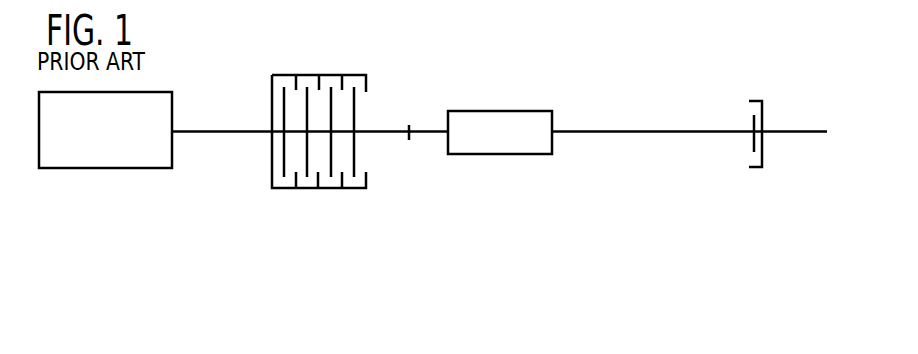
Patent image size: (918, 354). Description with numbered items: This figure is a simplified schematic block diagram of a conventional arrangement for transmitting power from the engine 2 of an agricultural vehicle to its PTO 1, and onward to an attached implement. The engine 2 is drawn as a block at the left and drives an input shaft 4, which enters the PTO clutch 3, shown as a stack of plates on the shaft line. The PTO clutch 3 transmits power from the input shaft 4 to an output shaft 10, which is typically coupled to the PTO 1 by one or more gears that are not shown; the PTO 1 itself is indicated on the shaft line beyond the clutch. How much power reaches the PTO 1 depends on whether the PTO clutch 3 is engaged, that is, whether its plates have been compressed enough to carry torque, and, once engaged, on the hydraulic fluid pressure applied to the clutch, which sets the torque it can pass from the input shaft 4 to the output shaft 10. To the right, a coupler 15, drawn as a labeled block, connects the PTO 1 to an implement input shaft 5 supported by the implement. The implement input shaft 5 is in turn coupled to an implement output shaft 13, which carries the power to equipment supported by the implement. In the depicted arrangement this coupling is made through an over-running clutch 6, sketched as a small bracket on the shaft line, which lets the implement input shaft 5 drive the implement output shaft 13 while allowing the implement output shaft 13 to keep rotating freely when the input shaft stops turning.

The PTO 1 is at (423, 131).
The engine 2 is at (105, 168).
The PTO clutch 3 is at (307, 188).
The input shaft 4 is at (227, 132).
The implement input shaft 5 is at (623, 132).
The over-running clutch 6 is at (752, 167).
The output shaft 10 is at (384, 133).
The implement output shaft 13 is at (782, 133).
The coupler 15 is at (497, 154).